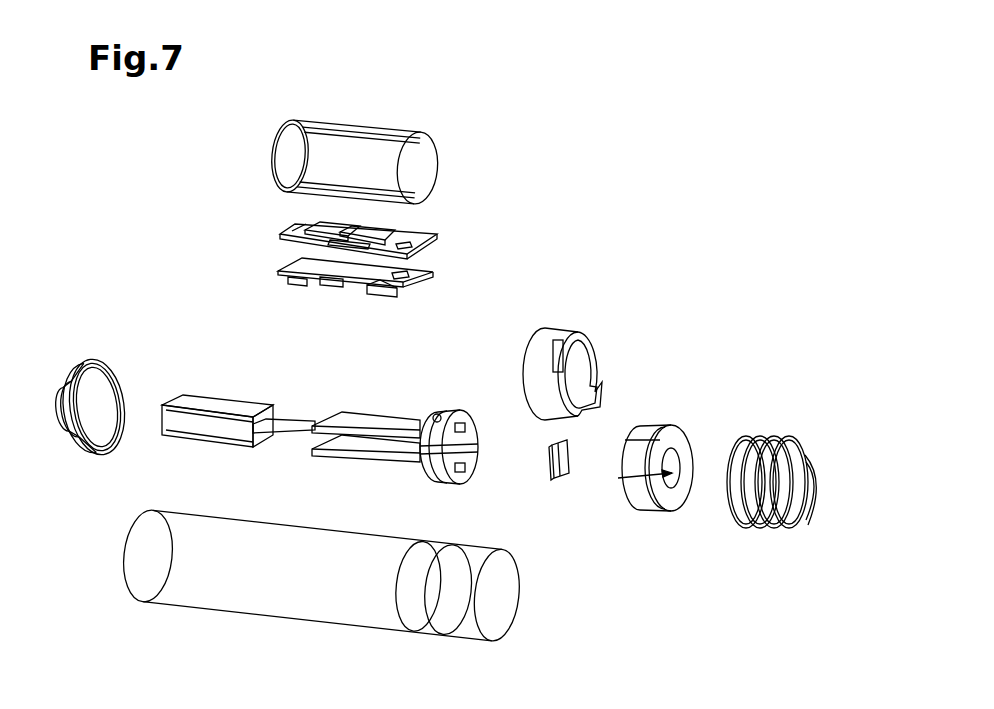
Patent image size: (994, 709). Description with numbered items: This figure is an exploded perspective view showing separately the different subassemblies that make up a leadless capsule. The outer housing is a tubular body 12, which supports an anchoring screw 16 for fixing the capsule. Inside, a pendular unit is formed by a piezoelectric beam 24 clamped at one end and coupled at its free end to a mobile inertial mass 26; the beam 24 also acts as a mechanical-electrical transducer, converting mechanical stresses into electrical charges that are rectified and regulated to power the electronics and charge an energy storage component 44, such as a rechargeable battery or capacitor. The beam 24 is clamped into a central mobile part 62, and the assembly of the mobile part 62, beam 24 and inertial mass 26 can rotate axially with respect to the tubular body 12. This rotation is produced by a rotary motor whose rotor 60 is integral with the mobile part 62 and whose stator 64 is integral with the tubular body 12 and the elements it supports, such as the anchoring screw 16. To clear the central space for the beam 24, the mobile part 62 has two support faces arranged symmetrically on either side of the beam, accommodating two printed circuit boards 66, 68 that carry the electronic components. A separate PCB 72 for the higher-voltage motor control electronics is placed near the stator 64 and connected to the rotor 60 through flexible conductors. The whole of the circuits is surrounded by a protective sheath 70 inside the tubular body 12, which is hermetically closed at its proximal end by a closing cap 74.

The tubular body 12 is at (302, 546).
The anchoring screw 16 is at (775, 435).
The piezoelectric beam 24 is at (297, 420).
The inertial mass 26 is at (217, 404).
The energy storage component 44 is at (650, 430).
The rotor 60 is at (443, 410).
The mobile part 62 is at (393, 410).
The stator 64 is at (547, 330).
The printed circuit board 66 is at (278, 238).
The printed circuit board 68 is at (277, 273).
The sheath 70 is at (438, 165).
The PCB for control electronics 72 is at (562, 460).
The closing cap 74 is at (97, 358).